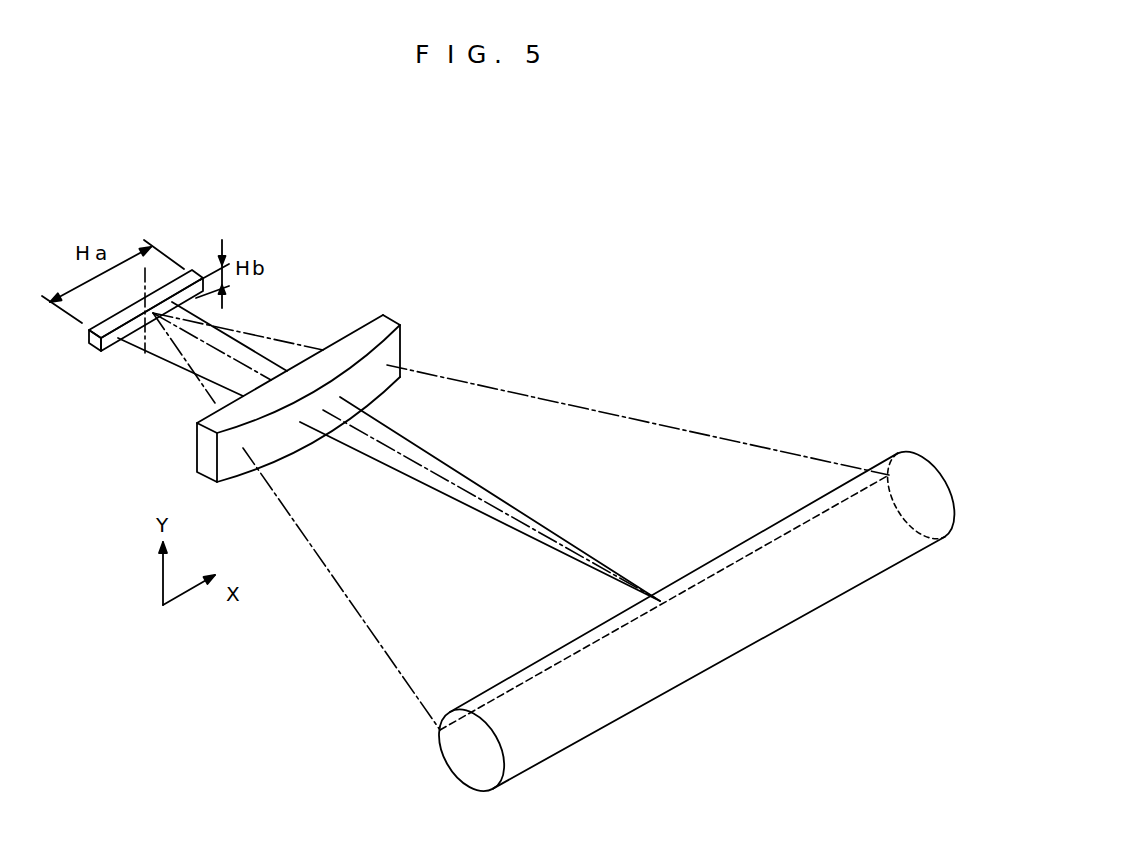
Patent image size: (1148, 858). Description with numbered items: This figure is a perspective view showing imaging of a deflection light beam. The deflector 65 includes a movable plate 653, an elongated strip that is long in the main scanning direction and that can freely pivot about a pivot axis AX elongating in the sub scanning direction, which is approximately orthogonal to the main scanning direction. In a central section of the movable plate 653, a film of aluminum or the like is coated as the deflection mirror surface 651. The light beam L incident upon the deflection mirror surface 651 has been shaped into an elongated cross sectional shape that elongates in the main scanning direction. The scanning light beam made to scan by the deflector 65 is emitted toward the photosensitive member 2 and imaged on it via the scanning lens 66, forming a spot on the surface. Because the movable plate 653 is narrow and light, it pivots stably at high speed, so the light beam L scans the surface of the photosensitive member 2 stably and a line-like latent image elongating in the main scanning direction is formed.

The deflector 65 is at (190, 303).
The deflection mirror surface 651 is at (113, 336).
The movable plate 653 is at (190, 268).
The scanning lens 66 is at (383, 313).
The photosensitive member 2 is at (740, 618).
The light beam L is at (260, 350).
The pivot axis AX is at (146, 326).